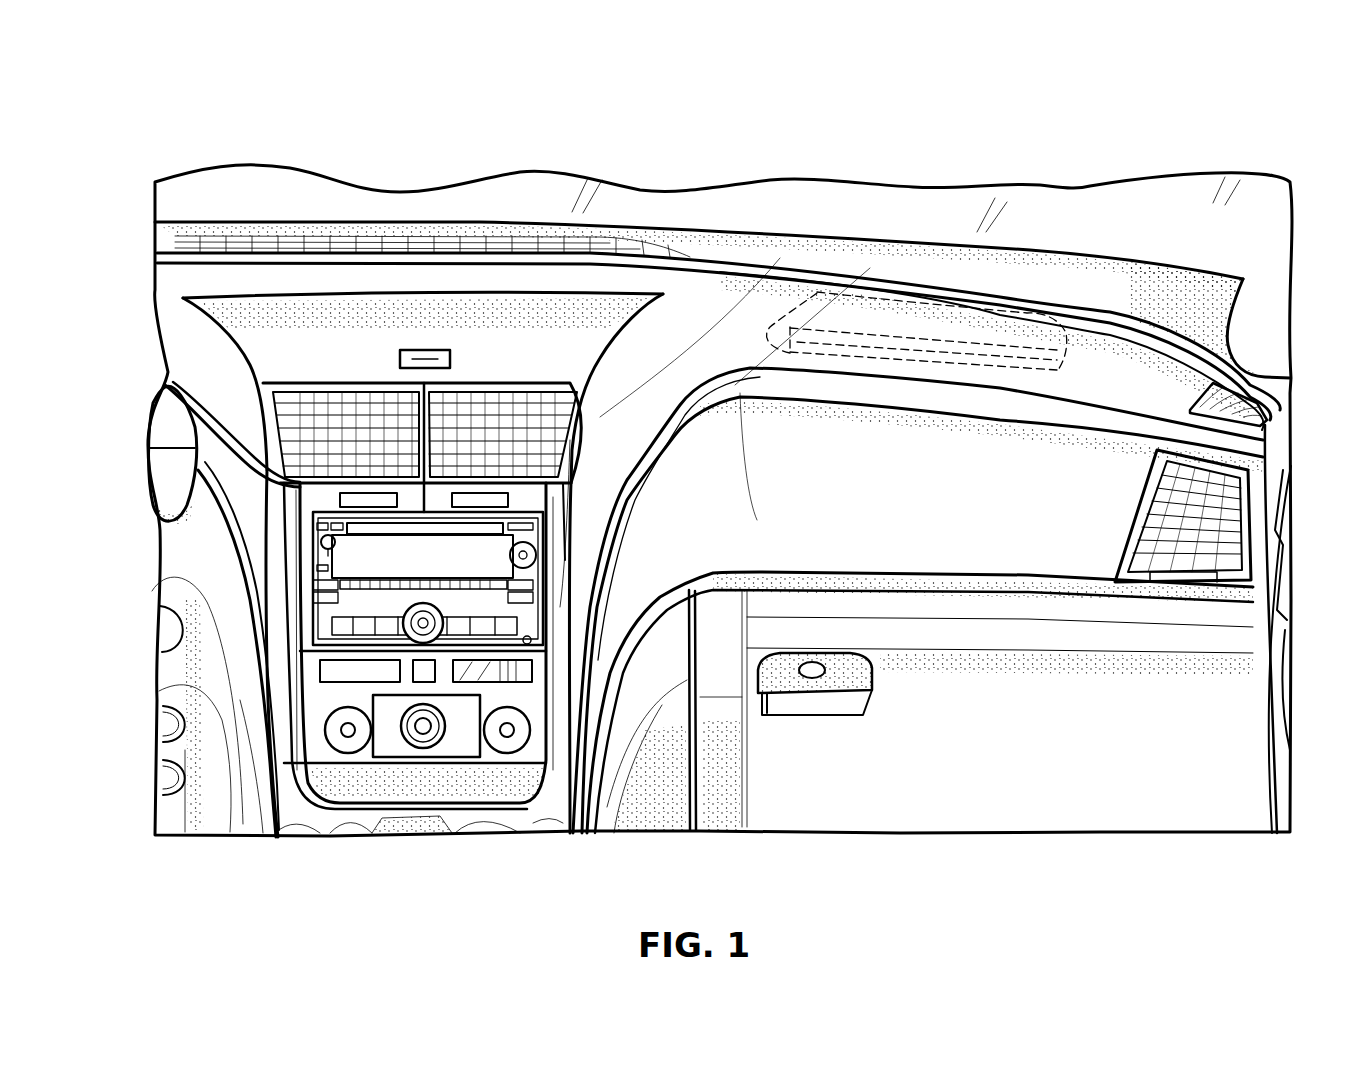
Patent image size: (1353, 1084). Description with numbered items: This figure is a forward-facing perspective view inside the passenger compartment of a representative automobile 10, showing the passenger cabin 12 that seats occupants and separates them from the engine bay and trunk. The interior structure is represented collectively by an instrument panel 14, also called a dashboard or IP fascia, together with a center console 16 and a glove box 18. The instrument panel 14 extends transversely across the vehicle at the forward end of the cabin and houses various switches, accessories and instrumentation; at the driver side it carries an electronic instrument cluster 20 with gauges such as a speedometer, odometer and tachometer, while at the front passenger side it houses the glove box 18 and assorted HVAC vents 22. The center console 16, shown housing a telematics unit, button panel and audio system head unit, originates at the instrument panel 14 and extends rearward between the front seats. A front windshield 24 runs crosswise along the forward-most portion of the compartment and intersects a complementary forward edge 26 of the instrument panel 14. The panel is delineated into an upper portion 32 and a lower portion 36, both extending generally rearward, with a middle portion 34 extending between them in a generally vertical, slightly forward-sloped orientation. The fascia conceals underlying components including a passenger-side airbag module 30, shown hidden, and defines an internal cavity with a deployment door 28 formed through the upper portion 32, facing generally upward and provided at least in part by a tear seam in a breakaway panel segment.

The automobile 10 is at (178, 117).
The passenger cabin 12 is at (797, 150).
The instrument panel 14 is at (675, 337).
The center console 16 is at (217, 583).
The glove box 18 is at (1224, 728).
The electronic instrument cluster 20 is at (158, 428).
The HVAC vents 22 is at (320, 380).
The front windshield 24 is at (960, 212).
The forward edge 26 is at (846, 240).
The deployment door 28 is at (767, 318).
The passenger-side airbag module 30 is at (1033, 310).
The upper portion 32 is at (1107, 252).
The middle portion 34 is at (702, 471).
The lower portion 36 is at (702, 745).